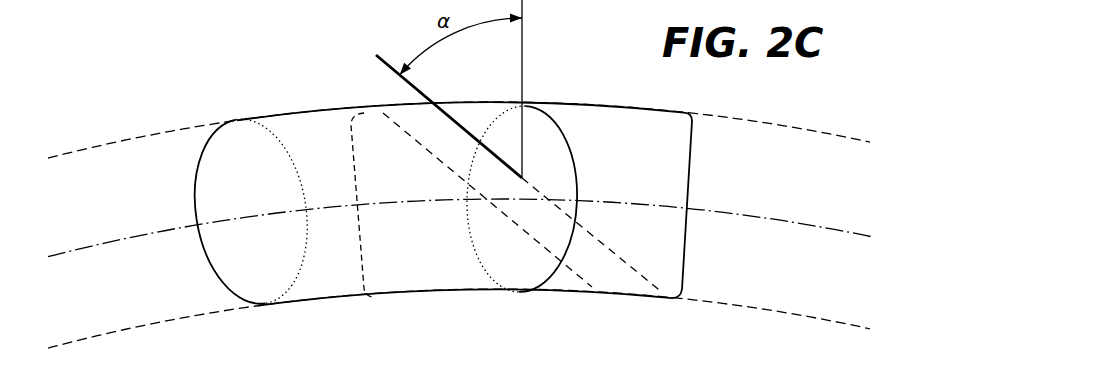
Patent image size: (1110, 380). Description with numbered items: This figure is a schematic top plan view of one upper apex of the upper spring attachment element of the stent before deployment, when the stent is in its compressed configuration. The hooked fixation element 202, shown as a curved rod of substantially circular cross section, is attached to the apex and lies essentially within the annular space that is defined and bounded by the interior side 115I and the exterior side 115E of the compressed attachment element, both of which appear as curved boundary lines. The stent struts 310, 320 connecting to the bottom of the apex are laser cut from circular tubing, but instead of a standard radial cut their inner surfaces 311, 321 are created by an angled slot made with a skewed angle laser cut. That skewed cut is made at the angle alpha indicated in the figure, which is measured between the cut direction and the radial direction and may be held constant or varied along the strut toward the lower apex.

The exterior side 115E is at (777, 122).
The interior side 115I is at (800, 318).
The hooked fixation element 202 is at (238, 145).
The stent strut 310 is at (633, 124).
The inner surface 311 is at (618, 258).
The stent strut 320 is at (391, 274).
The inner surface 321 is at (568, 265).